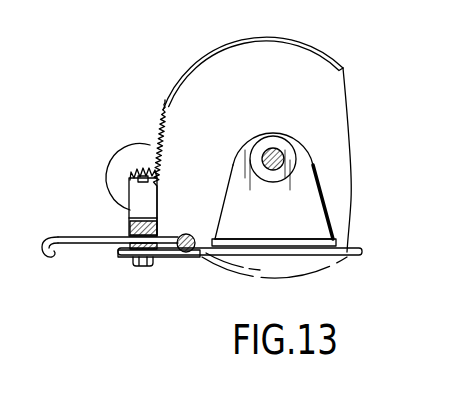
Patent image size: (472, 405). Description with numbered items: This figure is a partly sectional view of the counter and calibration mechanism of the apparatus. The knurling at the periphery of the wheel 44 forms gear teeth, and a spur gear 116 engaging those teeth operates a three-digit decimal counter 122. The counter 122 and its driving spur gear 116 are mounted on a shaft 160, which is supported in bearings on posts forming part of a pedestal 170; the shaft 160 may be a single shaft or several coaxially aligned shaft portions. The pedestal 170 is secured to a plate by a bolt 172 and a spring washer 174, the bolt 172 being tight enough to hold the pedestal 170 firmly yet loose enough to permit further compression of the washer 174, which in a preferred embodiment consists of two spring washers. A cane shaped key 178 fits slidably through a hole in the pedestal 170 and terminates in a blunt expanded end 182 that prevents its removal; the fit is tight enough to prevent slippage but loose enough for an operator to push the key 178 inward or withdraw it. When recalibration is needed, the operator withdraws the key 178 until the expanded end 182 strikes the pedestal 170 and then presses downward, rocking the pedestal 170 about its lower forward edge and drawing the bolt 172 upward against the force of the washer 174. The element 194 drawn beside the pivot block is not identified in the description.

The gear wheel 44 is at (156, 136).
The pinion pitch circle 116 is at (125, 164).
The pinion 122 is at (128, 161).
The bracket 160 is at (133, 184).
The nut 170 is at (133, 212).
The plate 172 is at (138, 262).
The lock nuts 174 is at (131, 258).
The hooked rod 178 is at (56, 238).
The bar 182 is at (198, 258).
The pivot block 194 is at (303, 183).